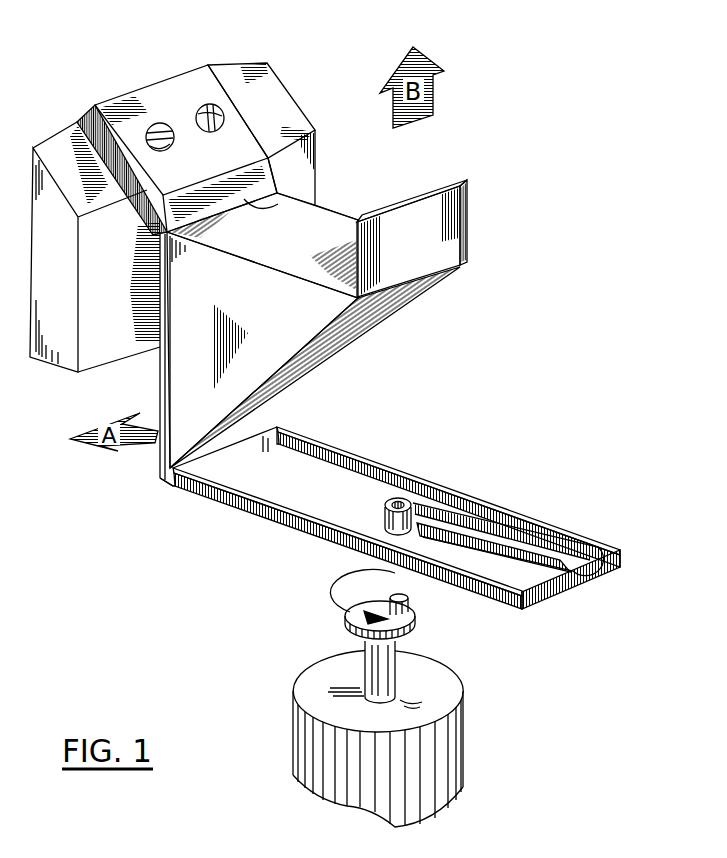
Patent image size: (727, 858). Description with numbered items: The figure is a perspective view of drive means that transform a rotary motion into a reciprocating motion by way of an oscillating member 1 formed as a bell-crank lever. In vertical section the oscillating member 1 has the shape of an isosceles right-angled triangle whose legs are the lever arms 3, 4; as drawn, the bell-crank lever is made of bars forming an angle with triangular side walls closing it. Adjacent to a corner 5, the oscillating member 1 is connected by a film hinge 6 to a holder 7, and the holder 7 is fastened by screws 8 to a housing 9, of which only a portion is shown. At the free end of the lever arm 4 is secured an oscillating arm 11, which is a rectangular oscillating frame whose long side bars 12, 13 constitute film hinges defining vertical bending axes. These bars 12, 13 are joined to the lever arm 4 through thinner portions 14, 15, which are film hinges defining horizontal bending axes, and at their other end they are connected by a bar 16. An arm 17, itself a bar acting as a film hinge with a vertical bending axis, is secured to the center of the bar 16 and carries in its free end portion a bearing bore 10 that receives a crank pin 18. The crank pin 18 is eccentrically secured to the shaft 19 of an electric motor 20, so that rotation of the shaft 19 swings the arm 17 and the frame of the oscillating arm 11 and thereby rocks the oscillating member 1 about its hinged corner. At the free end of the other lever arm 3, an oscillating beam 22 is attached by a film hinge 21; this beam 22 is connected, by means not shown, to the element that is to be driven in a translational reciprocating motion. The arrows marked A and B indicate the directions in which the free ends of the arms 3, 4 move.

The oscillating member 1 is at (347, 348).
The lever arm 3 is at (322, 222).
The lever arm 4 is at (160, 371).
The corner 5 is at (95, 247).
The film hinge 6 is at (290, 198).
The holder 7 is at (160, 102).
The screws 8 is at (166, 150).
The housing 9 is at (279, 107).
The bearing bore 10 is at (403, 500).
The oscillating arm 11 is at (478, 482).
The long side bar 12 is at (353, 453).
The long side bar 13 is at (290, 520).
The thinner portion 14 is at (270, 443).
The thinner portion 15 is at (168, 482).
The bar 16 is at (563, 587).
The arm 17 is at (503, 550).
The crank pin 18 is at (408, 608).
The shaft 19 is at (387, 665).
The electric motor 20 is at (447, 742).
The film hinge 21 is at (407, 307).
The oscillating beam 22 is at (453, 217).